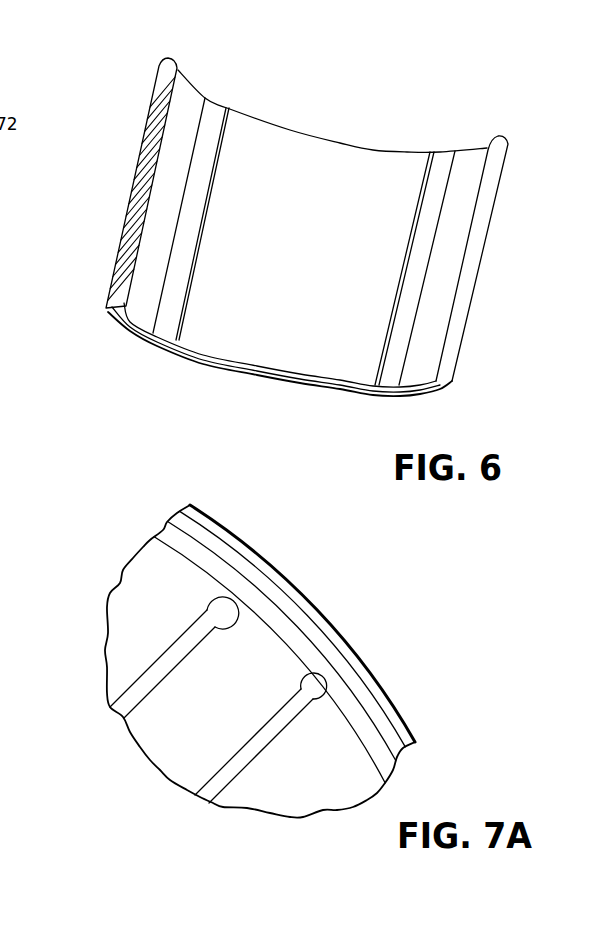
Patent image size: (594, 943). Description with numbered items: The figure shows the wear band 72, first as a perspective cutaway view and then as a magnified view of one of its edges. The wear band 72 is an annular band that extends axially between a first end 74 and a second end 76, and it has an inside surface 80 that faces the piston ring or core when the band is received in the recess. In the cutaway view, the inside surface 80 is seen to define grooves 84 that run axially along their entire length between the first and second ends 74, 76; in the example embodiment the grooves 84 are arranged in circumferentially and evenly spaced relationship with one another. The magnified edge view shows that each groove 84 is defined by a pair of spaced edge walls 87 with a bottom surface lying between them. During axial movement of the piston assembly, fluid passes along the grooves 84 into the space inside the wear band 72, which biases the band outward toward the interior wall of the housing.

In FIG. 6, the wear band 72 is at (507, 136).
In FIG. 6, the first end 74 is at (317, 138).
In FIG. 7A, the first end 74 is at (372, 710).
In FIG. 6, the second end 76 is at (202, 364).
In FIG. 6, the inside surface 80 is at (293, 355).
In FIG. 7A, the inside surface 80 is at (131, 638).
In FIG. 6, the groove 84 is at (208, 112).
In FIG. 7A, the groove 84 is at (265, 643).
In FIG. 7A, the edge walls 87 is at (247, 612).